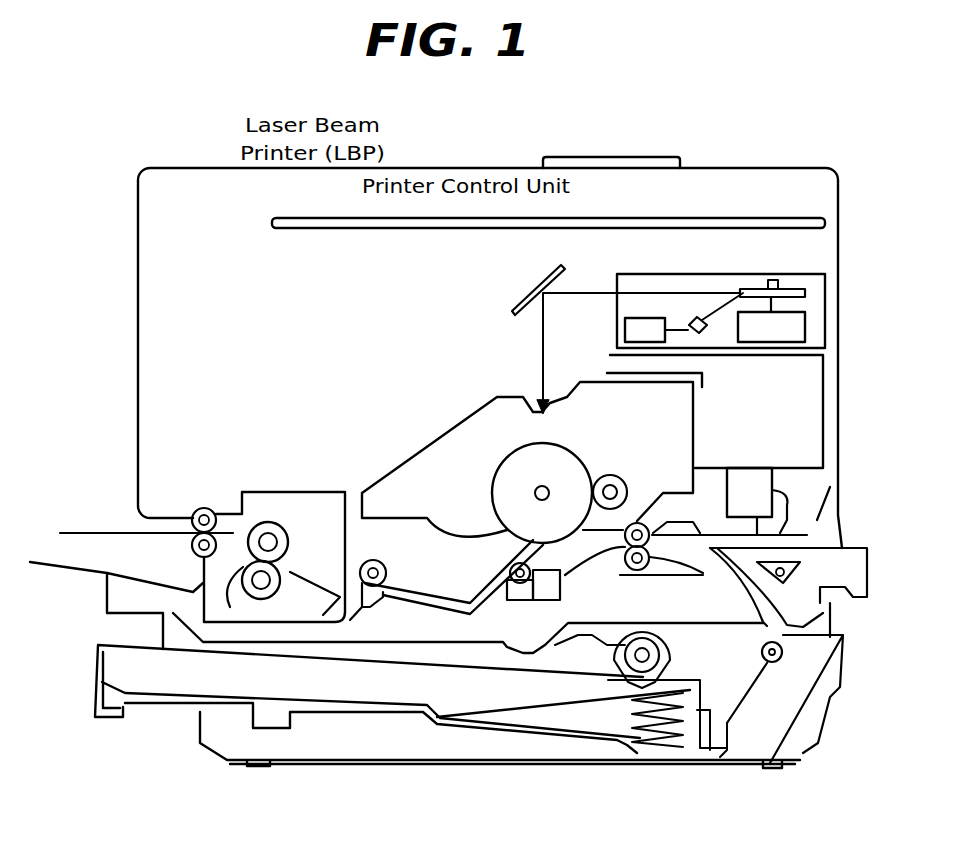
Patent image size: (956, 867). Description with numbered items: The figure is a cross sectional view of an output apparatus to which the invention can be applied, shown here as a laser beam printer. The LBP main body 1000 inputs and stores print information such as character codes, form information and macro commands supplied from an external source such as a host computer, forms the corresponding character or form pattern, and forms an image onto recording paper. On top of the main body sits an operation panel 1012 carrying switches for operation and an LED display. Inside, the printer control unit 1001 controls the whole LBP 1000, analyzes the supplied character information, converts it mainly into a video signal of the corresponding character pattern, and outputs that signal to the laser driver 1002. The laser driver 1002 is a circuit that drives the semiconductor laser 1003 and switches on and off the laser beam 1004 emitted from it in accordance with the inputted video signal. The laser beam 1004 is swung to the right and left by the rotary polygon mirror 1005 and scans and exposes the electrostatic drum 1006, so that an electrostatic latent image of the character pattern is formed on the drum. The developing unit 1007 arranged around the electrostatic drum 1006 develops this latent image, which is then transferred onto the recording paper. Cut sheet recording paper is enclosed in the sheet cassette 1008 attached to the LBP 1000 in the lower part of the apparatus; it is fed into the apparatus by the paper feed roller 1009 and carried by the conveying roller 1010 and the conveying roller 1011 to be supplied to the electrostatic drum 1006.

The LBP main body 1000 is at (178, 145).
The printer control unit 1001 is at (303, 198).
The laser driver 1002 is at (625, 331).
The semiconductor laser 1003 is at (702, 331).
The laser beam 1004 is at (703, 290).
The rotary polygon mirror 1005 is at (795, 287).
The electrostatic drum 1006 is at (590, 443).
The developing unit 1007 is at (415, 456).
The sheet cassette 1008 is at (98, 650).
The paper feed roller 1009 is at (640, 665).
The conveying roller 1010 is at (780, 665).
The conveying roller 1011 is at (652, 572).
The operation panel 1012 is at (655, 143).